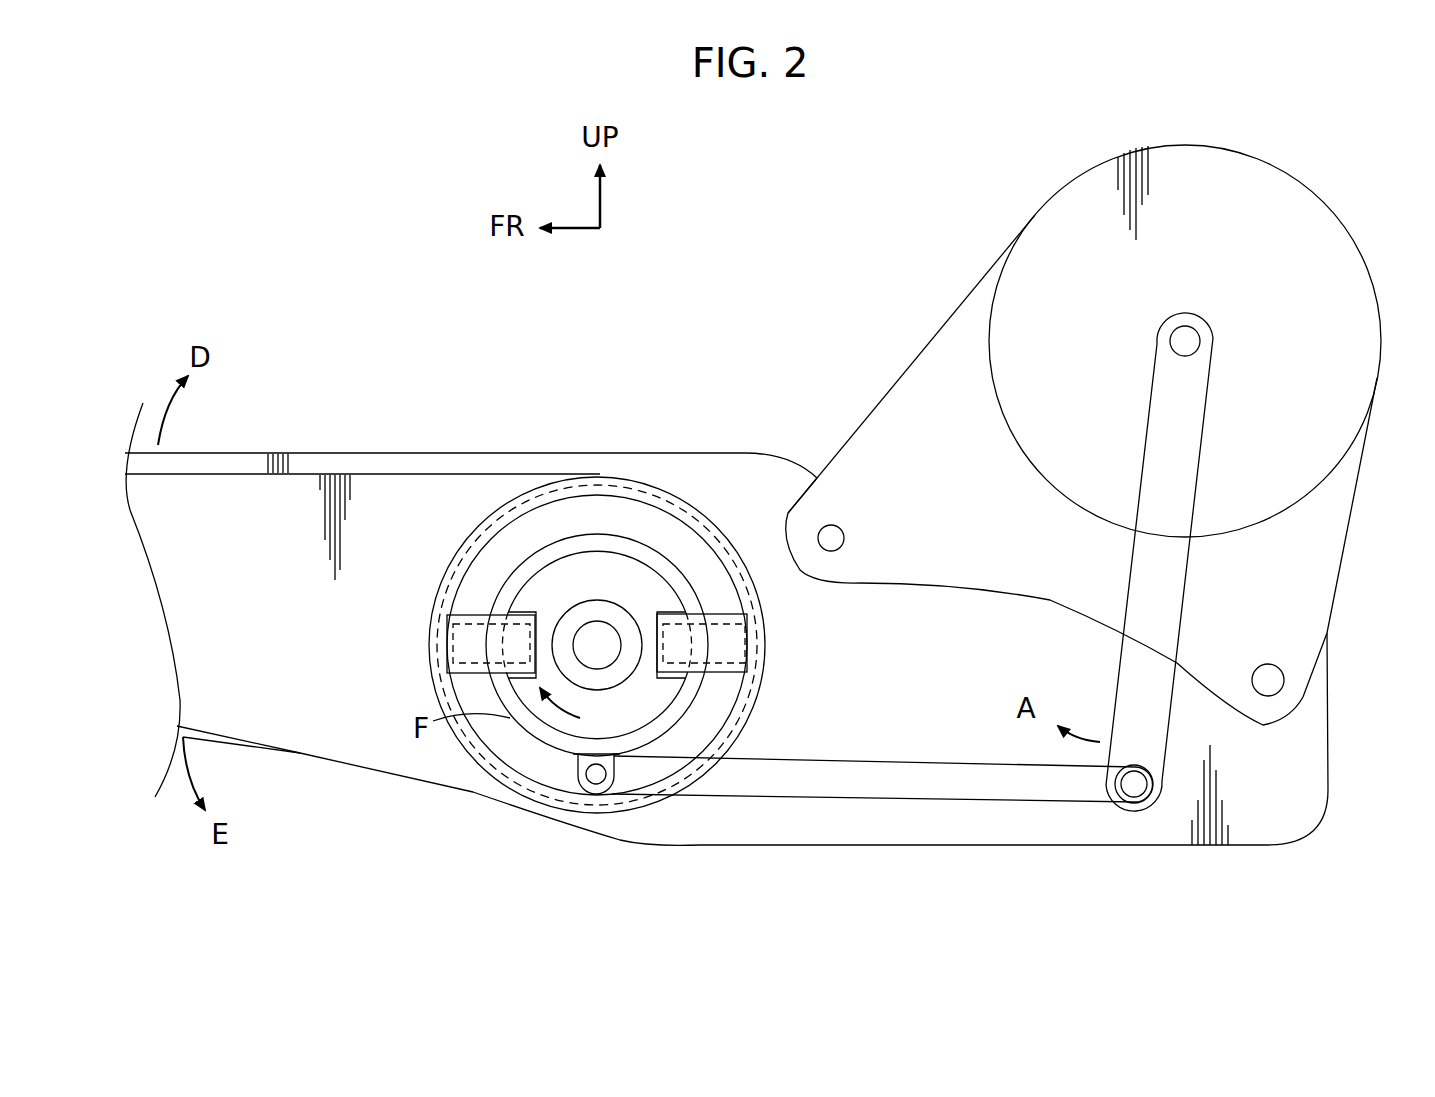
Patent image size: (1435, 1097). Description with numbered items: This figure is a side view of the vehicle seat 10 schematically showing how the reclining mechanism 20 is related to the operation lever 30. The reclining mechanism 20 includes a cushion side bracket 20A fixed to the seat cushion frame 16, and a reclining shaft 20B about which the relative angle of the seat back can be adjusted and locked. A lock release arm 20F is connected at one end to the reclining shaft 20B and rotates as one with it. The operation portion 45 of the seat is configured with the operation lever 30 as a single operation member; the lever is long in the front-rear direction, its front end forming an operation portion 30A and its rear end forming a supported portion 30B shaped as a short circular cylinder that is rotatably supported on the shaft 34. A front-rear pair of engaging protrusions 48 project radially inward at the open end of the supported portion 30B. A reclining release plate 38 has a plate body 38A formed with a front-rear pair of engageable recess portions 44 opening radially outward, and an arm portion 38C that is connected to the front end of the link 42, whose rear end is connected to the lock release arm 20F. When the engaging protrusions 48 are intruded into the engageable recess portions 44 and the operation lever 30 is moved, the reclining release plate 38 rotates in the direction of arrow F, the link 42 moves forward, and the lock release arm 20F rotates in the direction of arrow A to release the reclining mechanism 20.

The vehicle seat 10 is at (918, 170).
The seat cushion frame 16 is at (384, 449).
The reclining mechanism 20 is at (1358, 205).
The cushion side bracket 20A is at (1310, 578).
The reclining shaft 20B is at (1190, 343).
The lock release arm 20F is at (1185, 460).
The operation lever 30 is at (524, 470).
The operation portion 30A is at (192, 490).
The supported portion 30B is at (640, 495).
The shaft 34 is at (600, 653).
The reclining release plate 38 is at (520, 733).
The plate body 38A is at (568, 723).
The arm portion 38C is at (613, 780).
The link 42 is at (897, 770).
The engageable recess portions 44 is at (682, 612).
The operation portion 45 is at (781, 418).
The engaging protrusions 48 is at (452, 648).